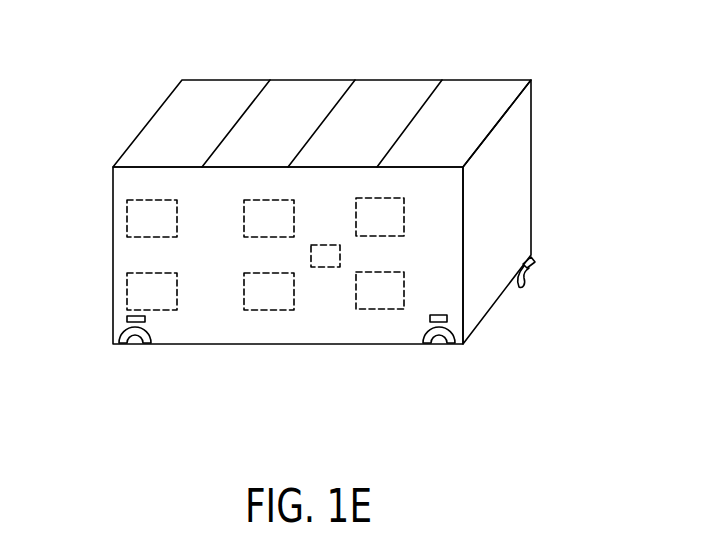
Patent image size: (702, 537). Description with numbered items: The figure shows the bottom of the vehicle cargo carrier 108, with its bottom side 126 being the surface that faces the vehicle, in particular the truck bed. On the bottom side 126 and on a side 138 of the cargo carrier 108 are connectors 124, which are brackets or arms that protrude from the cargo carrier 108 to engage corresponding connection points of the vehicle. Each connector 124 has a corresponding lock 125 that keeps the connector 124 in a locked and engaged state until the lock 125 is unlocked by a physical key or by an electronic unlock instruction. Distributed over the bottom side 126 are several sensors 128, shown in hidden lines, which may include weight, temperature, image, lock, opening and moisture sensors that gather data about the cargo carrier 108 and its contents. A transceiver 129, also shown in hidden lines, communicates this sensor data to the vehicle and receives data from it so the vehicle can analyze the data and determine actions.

The cargo carrier 108 is at (324, 80).
The connectors 124 is at (143, 341).
The locks 125 is at (121, 324).
The bottom side 126 is at (103, 182).
The sensors 128 is at (267, 198).
The transceiver 129 is at (319, 244).
The side 138 is at (516, 319).